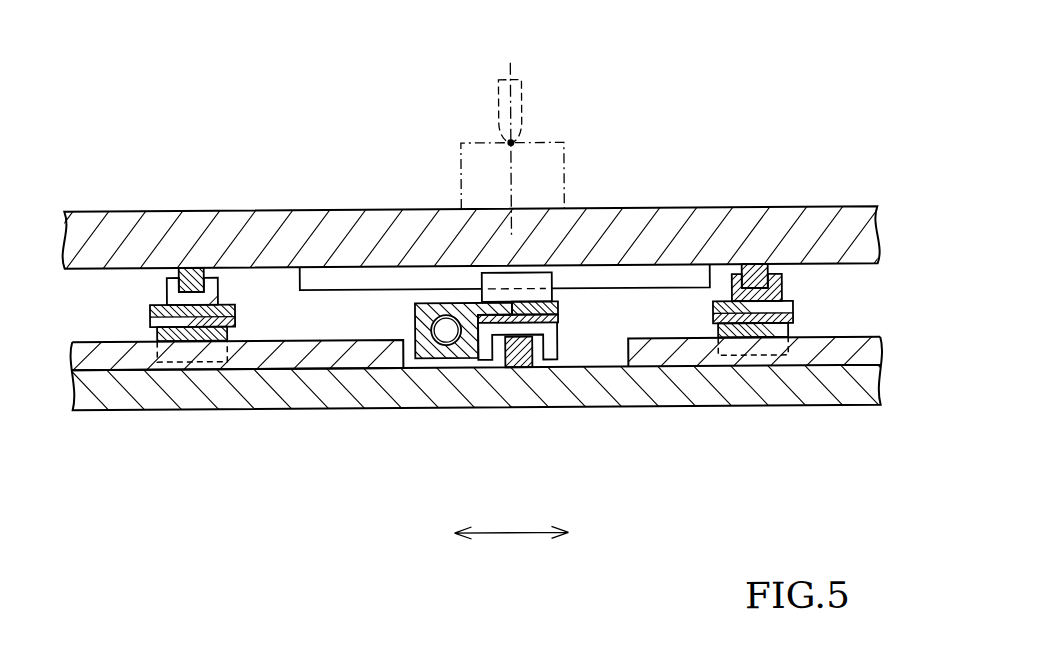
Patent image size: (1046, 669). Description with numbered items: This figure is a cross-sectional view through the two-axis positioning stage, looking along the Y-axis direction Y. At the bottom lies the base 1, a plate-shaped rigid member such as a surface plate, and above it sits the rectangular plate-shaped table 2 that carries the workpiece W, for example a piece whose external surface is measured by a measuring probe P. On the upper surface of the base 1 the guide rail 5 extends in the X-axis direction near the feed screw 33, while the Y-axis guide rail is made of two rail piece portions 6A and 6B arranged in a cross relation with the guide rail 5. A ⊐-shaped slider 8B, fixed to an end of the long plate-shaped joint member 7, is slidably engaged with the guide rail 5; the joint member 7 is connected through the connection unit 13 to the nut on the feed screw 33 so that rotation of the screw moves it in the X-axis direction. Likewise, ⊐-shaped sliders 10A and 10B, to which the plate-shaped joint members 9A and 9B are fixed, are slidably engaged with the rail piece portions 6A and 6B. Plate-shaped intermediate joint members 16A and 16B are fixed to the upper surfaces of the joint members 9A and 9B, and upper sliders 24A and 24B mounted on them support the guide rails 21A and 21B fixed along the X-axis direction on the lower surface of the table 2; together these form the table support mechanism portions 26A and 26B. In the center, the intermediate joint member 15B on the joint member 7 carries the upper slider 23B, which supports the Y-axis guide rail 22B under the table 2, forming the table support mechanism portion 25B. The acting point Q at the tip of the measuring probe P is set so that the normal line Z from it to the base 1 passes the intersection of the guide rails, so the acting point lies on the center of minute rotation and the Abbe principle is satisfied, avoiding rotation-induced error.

The base 1 is at (104, 396).
The table 2 is at (288, 209).
The guide rail 5 is at (515, 360).
The rail piece portion 6A is at (298, 358).
The rail piece portion 6B is at (845, 352).
The joint member 7 is at (558, 323).
The slider 8B is at (492, 350).
The joint member 9A is at (228, 332).
The joint member 9B is at (718, 326).
The slider 10A is at (197, 360).
The slider 10B is at (752, 357).
The connection unit 13 is at (460, 312).
The intermediate joint member 15B is at (556, 306).
The intermediate joint member 16A is at (150, 311).
The intermediate joint member 16B is at (793, 311).
The guide rail 21A is at (196, 266).
The guide rail 21B is at (757, 268).
The guide rail 22B is at (354, 268).
The upper slider 23B is at (552, 276).
The upper slider 24A is at (168, 289).
The upper slider 24B is at (783, 282).
The table support mechanism portion 25B is at (417, 230).
The table support mechanism portion 26A is at (473, 224).
The table support mechanism portion 26B is at (473, 209).
The feed screw 33 is at (447, 303).
The workpiece W is at (462, 158).
The measuring probe P is at (498, 90).
The normal line Z is at (510, 127).
The acting point Q is at (512, 143).
The Y-axis direction Y is at (511, 513).